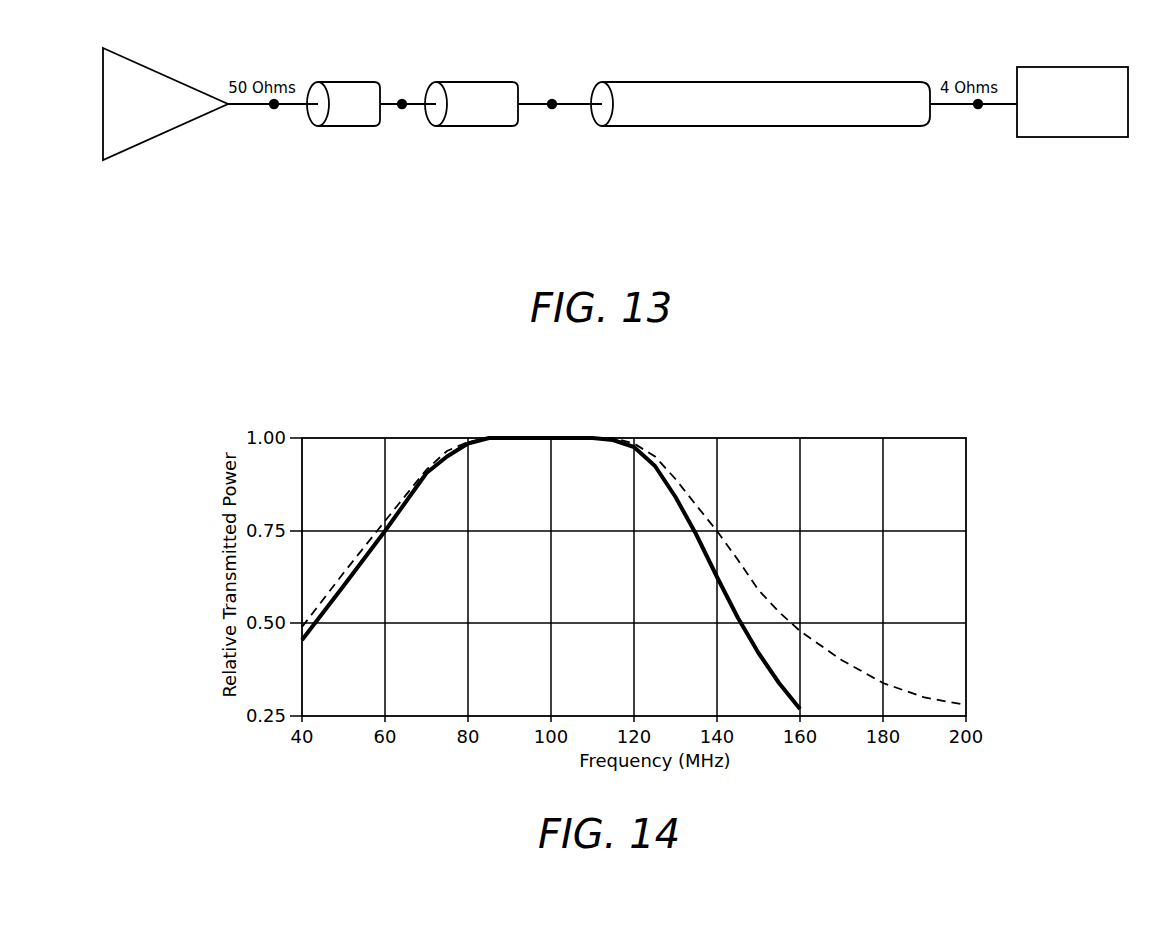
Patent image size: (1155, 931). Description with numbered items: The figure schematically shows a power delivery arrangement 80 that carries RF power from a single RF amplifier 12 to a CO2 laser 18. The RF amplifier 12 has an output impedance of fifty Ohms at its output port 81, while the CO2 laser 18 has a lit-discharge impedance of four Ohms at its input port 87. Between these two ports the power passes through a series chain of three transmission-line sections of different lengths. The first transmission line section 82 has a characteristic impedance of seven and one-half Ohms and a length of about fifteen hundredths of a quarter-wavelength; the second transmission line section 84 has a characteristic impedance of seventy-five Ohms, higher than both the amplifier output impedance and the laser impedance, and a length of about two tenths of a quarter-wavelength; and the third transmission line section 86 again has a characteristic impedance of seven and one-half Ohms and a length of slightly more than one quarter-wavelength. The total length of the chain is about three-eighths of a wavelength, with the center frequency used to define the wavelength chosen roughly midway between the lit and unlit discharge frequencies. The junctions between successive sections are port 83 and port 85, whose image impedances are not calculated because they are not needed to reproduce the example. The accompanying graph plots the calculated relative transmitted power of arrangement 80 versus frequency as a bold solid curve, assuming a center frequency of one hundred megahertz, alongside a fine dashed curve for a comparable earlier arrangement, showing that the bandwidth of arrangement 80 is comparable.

The RF amplifier 12 is at (158, 138).
The CO2 laser 18 is at (1085, 137).
The power delivery arrangement 80 is at (775, 220).
The port 81 is at (274, 108).
The transmission line section 82 is at (347, 126).
The port 83 is at (402, 108).
The transmission line section 84 is at (483, 126).
The port 85 is at (552, 108).
The transmission line section 86 is at (795, 126).
The port 87 is at (980, 108).